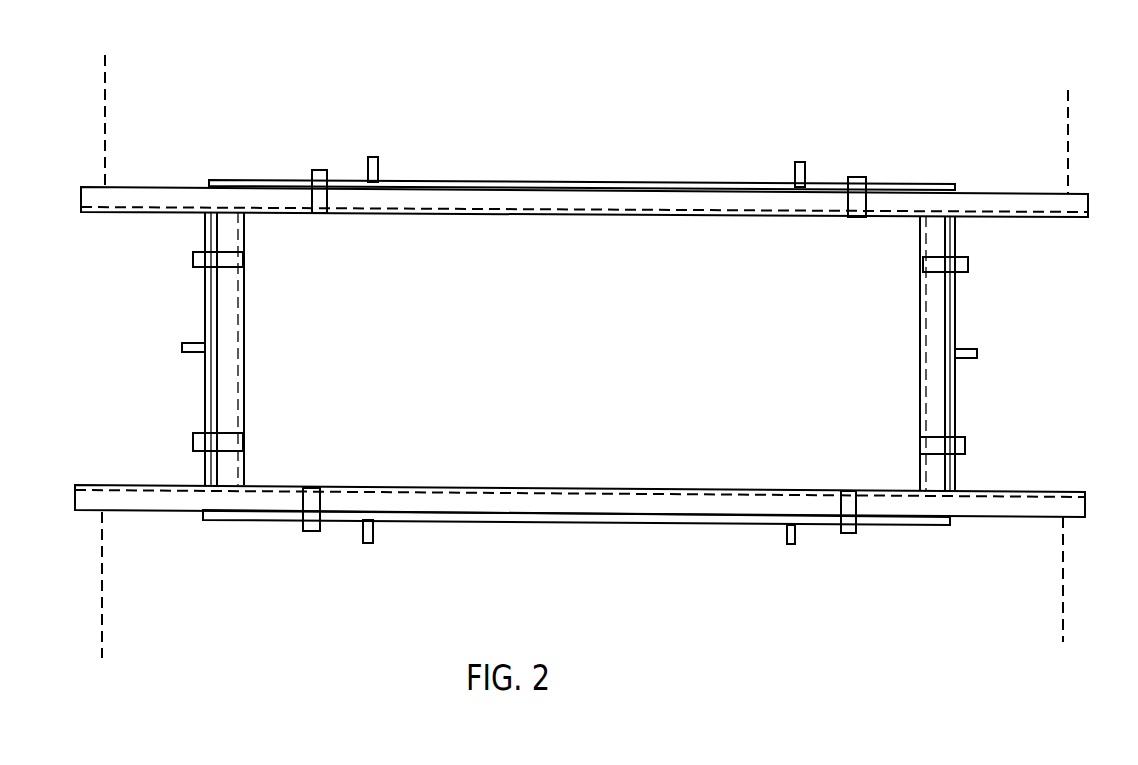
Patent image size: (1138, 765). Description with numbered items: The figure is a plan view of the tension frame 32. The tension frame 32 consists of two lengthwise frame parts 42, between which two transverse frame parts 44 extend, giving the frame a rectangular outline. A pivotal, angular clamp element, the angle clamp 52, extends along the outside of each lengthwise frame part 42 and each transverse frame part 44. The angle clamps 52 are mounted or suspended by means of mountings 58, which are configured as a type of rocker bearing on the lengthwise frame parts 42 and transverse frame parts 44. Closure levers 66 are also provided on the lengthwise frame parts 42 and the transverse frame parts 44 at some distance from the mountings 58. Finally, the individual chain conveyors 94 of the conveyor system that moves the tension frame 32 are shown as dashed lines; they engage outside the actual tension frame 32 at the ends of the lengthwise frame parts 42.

The tension frame 32 is at (494, 136).
The lengthwise frame parts 42 is at (535, 200).
The transverse frame parts 44 is at (227, 323).
The angle clamp 52 is at (568, 181).
The mountings 58 is at (318, 170).
The closure levers 66 is at (373, 157).
The chain conveyors 94 is at (105, 109).